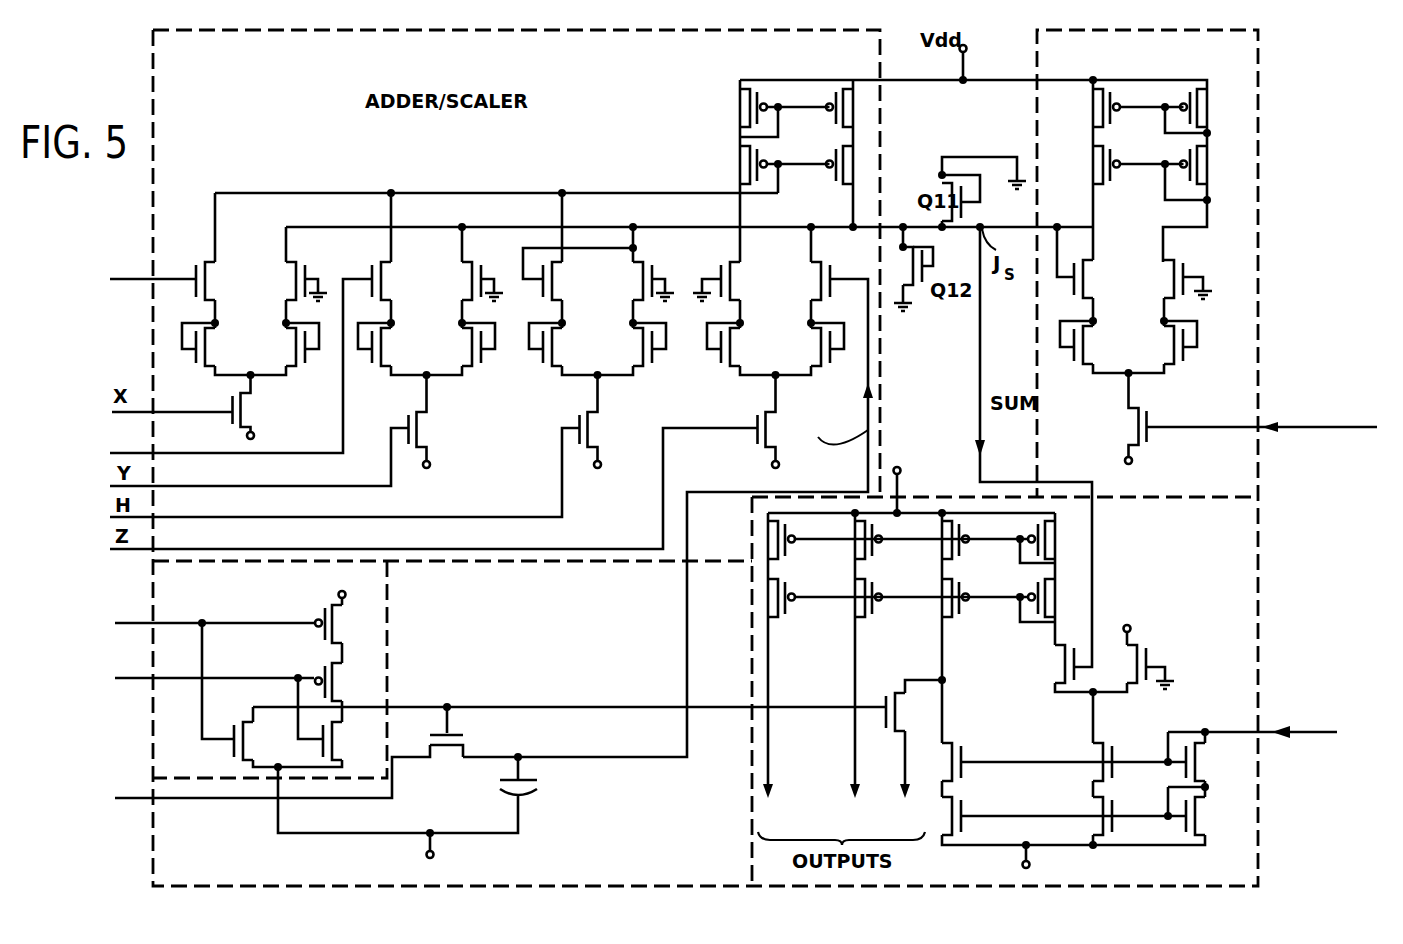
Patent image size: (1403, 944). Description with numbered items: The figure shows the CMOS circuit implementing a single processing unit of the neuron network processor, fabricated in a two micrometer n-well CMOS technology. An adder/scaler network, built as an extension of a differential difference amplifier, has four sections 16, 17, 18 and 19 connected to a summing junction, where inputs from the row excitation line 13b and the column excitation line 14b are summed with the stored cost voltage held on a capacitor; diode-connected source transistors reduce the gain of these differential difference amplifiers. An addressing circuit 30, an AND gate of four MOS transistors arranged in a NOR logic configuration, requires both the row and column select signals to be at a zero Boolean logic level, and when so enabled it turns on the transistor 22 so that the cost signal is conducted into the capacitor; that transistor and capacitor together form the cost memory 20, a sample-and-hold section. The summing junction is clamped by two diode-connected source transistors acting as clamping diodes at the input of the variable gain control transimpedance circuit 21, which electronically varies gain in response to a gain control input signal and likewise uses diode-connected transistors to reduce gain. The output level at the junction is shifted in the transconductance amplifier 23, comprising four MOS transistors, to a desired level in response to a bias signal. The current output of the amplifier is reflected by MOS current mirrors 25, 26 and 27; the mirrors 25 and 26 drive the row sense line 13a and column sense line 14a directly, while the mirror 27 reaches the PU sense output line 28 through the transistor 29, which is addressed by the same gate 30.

The row sense line 13a is at (779, 805).
The row excitation line 13b is at (122, 277).
The column sense line 14a is at (857, 805).
The column excitation line 14b is at (234, 366).
The adder/scaler section 16 is at (265, 324).
The adder/scaler section 17 is at (437, 324).
The adder/scaler section 18 is at (792, 324).
The adder/scaler section 19 is at (612, 324).
The cost memory 20 is at (639, 882).
The variable gain control transimpedance circuit 21 is at (1242, 260).
The transistor 22 is at (440, 750).
The transconductance amplifier 23 is at (1046, 702).
The current mirror 25 is at (778, 630).
The current mirror 26 is at (869, 630).
The current mirror 27 is at (959, 630).
The PU sense output line 28 is at (910, 805).
The transistor 29 is at (599, 730).
The addressing circuit 30 is at (151, 711).